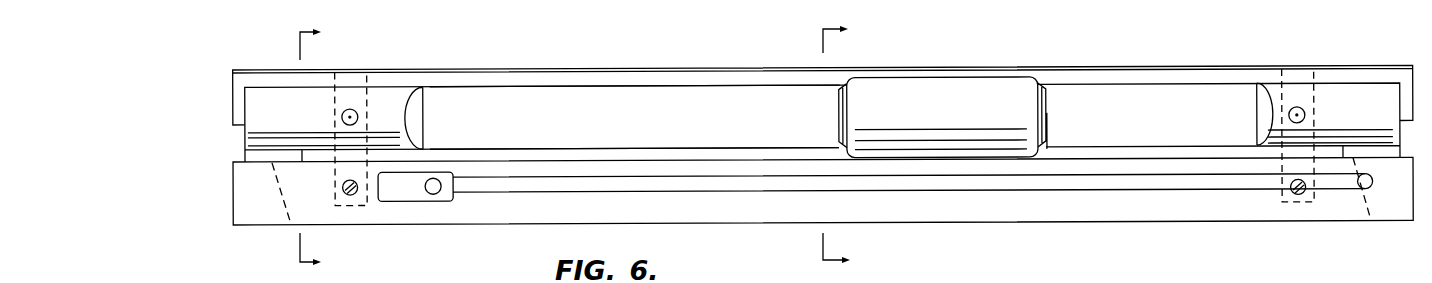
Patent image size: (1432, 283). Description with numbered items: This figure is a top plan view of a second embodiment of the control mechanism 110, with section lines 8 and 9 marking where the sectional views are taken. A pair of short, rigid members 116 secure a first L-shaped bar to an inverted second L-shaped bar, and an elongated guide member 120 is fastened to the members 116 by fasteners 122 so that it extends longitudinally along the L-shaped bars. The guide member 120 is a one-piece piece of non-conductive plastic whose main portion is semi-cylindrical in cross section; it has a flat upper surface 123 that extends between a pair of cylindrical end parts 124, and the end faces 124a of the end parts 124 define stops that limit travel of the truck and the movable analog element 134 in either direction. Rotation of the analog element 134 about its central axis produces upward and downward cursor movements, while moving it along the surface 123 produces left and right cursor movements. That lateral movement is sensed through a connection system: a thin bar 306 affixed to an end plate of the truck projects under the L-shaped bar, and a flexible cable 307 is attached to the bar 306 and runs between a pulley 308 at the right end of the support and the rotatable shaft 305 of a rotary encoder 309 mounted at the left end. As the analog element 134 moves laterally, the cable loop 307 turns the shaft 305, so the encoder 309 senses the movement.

The section line 8- 8 is at (320, 146).
The section line 9- 9 is at (846, 142).
The control mechanism 110 is at (1157, 65).
The short rigid members 116 is at (349, 80).
The elongated guide member 120 is at (1068, 83).
The fasteners 122 is at (340, 117).
The flat upper surface 123 is at (648, 126).
The cylindrical end parts 124 is at (398, 95).
The end faces 124a is at (423, 120).
The movable analog element 134 is at (942, 95).
The rotatable shaft 305 is at (437, 194).
The thin bar 306 is at (1050, 130).
The flexible cable 307 is at (1063, 193).
The pulley 308 is at (1362, 188).
The rotary encoder 309 is at (417, 196).